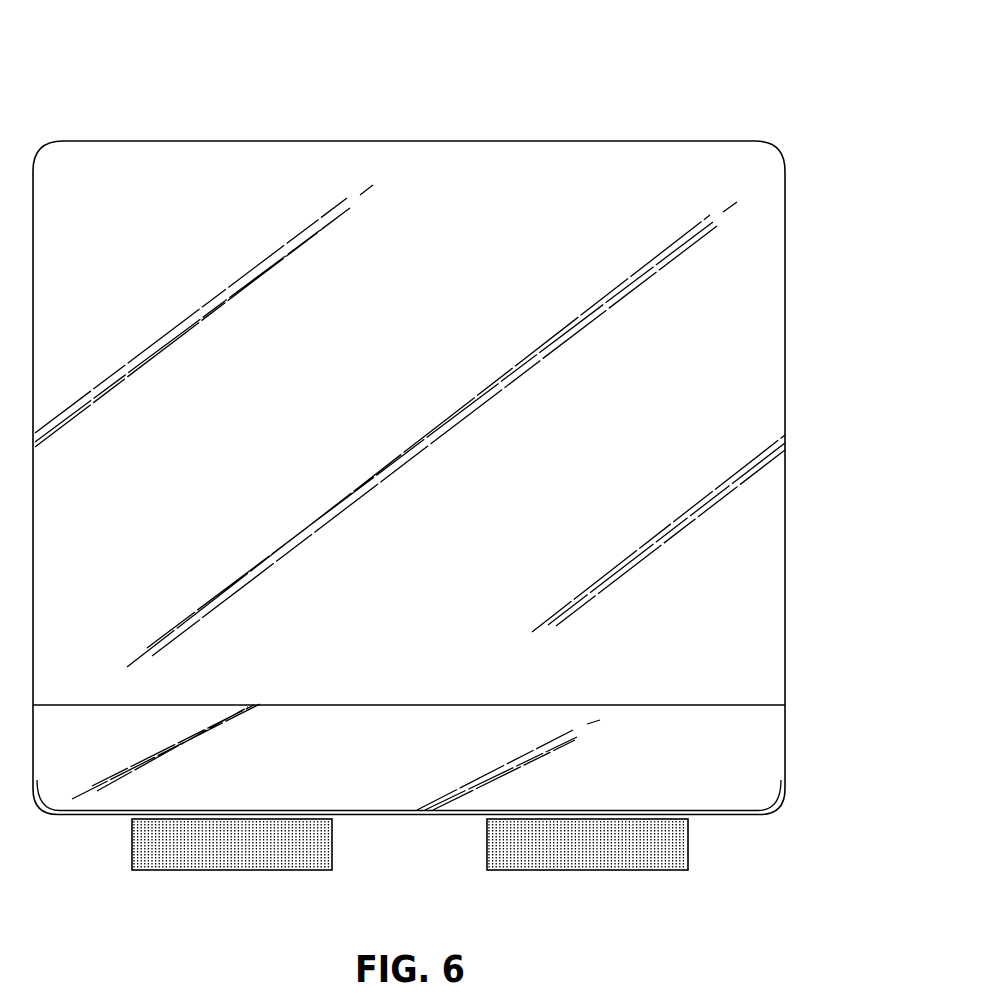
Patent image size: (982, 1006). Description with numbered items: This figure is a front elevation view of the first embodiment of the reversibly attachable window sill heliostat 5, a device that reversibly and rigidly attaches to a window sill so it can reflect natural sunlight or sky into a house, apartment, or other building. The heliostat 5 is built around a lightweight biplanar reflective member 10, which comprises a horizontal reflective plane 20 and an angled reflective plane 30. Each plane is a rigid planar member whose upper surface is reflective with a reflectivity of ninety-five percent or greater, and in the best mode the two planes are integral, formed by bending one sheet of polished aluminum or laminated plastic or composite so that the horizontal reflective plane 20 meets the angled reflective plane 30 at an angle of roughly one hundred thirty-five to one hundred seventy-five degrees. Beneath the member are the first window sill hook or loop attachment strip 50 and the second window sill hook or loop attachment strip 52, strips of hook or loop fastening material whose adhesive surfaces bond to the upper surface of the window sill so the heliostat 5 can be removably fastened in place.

The reversibly attachable window sill heliostat 5 is at (75, 88).
The lightweight biplanar reflective member 10 is at (463, 491).
The horizontal reflective plane 20 is at (785, 750).
The angled reflective plane 30 is at (785, 330).
The first window sill hook or loop attachment strip 50 is at (160, 862).
The second window sill hook or loop attachment strip 52 is at (633, 860).